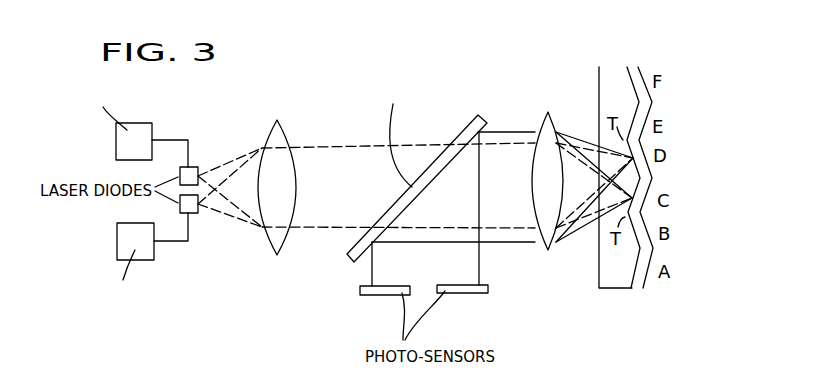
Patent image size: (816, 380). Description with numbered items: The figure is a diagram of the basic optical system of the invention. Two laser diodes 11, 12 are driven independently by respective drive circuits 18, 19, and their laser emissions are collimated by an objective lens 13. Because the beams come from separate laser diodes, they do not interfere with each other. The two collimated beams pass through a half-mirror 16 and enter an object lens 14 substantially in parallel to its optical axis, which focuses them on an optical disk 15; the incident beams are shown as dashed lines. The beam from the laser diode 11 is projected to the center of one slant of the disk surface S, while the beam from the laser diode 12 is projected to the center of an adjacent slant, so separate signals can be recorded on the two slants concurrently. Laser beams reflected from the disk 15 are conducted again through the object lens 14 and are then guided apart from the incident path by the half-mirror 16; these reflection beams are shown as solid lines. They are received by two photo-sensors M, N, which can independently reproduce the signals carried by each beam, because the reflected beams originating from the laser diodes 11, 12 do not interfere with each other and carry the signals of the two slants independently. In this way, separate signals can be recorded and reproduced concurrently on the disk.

The laser diode 11 is at (194, 216).
The laser diode 12 is at (195, 165).
The objective lens 13 is at (280, 125).
The object lens 14 is at (542, 127).
The optical disk 15 is at (633, 63).
The half-mirror 16 is at (474, 123).
The drive circuit 18 is at (116, 244).
The drive circuit 19 is at (115, 143).
The photo-sensor N is at (385, 304).
The photo-sensor M is at (462, 303).
The disc surface S is at (655, 178).